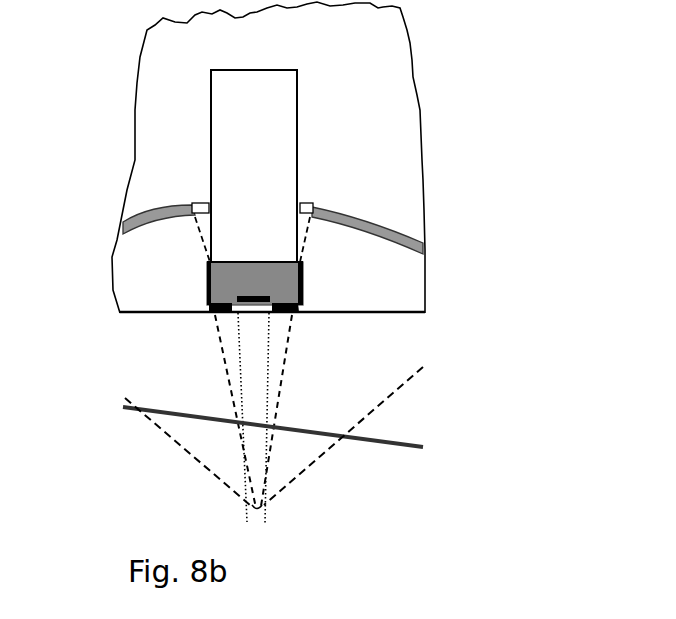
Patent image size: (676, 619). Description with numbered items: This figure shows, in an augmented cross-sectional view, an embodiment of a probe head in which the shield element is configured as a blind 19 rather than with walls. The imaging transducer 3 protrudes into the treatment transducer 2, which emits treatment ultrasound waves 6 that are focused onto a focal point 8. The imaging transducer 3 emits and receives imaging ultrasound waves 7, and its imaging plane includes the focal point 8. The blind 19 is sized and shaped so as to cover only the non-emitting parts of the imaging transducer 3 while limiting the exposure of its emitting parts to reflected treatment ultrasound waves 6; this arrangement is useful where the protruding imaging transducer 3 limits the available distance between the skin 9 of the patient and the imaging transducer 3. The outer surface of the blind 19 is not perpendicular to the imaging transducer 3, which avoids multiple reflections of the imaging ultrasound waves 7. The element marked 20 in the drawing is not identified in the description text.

The treatment transducer 2 is at (368, 212).
The imaging transducer 3 is at (208, 288).
The blind 19 is at (213, 313).
The light emitter 20 is at (255, 305).
The skin 9 is at (415, 443).
The imaging ultrasound waves 7 is at (237, 402).
The treatment ultrasound waves 6 is at (330, 453).
The focal point 8 is at (267, 512).